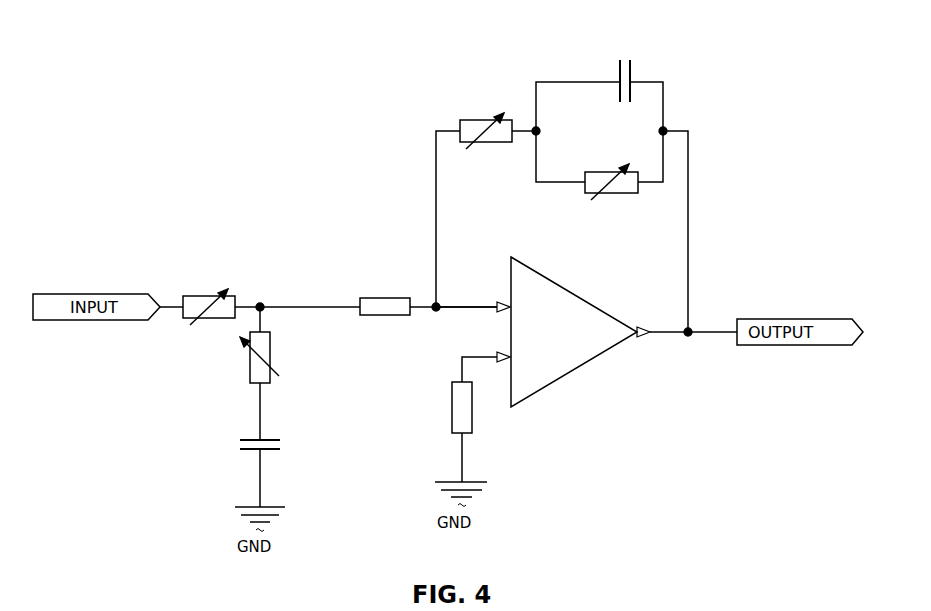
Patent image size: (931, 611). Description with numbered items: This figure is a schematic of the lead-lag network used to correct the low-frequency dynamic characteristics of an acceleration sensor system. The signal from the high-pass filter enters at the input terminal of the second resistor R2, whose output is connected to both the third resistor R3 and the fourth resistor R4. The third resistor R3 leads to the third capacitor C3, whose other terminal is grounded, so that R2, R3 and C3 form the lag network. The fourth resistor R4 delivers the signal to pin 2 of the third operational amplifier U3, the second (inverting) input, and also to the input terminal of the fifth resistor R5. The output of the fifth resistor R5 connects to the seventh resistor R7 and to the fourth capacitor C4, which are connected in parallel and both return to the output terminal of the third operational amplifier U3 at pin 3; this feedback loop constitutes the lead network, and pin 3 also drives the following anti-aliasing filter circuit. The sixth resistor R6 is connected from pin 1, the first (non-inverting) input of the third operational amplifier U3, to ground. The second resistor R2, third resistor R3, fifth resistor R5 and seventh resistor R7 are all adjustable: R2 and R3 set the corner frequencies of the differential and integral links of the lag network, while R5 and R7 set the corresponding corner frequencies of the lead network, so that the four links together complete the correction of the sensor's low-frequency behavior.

The second resistor R2 is at (197, 294).
The third resistor R3 is at (271, 373).
The fourth resistor R4 is at (384, 319).
The fifth resistor R5 is at (486, 197).
The sixth resistor R6 is at (472, 432).
The seventh resistor R7 is at (599, 165).
The third capacitor C3 is at (271, 473).
The fourth capacitor C4 is at (599, 83).
The third operational amplifier U3 is at (573, 320).
The non-inverting input pin 1 is at (479, 359).
The inverting input pin 2 is at (466, 298).
The output pin 3 is at (693, 323).